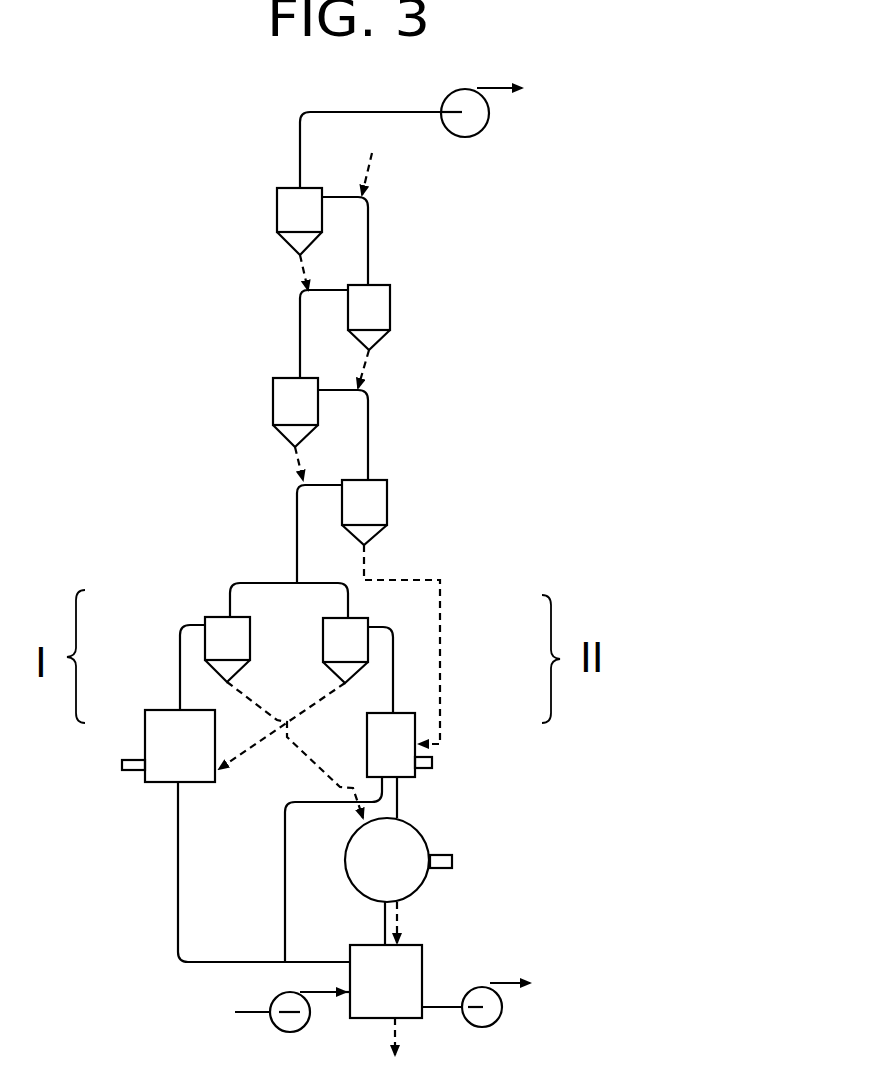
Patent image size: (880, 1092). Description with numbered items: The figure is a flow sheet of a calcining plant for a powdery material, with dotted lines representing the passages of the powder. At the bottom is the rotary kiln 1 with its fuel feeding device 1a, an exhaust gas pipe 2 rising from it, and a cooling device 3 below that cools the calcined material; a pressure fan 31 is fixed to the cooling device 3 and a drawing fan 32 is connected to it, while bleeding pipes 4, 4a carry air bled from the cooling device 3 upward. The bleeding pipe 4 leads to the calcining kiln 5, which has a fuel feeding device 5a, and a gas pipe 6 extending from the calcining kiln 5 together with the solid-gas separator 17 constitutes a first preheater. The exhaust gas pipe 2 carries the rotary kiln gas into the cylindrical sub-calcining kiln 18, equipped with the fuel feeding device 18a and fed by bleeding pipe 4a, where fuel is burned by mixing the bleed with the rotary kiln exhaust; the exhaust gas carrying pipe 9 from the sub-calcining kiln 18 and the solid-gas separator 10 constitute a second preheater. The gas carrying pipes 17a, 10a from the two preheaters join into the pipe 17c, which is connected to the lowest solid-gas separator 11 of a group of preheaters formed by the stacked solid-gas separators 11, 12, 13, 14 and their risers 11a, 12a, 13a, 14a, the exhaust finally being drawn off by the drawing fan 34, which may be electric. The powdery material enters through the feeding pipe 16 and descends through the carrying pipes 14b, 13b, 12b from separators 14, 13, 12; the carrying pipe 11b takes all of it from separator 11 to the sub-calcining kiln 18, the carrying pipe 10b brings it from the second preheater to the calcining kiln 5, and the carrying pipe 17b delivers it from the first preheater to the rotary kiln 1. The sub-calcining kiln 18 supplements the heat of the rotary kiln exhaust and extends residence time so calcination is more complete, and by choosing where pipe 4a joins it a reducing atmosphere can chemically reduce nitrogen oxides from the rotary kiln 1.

The rotary kiln 1 is at (387, 881).
The feeding device 1a is at (453, 862).
The exhaust gas pipe 2 is at (398, 800).
The cooling device 3 is at (386, 1000).
The bleeding pipe 4 is at (177, 882).
The bleeding pipe 4a is at (285, 884).
The calcining kiln 5 is at (180, 746).
The feeding device 5a is at (127, 780).
The gas pipe 6 is at (180, 665).
The exhaust gas carrying pipe 9 is at (395, 665).
The solid-gas separator 10 is at (345, 650).
The gas carrying pipe 10a is at (350, 600).
The powdery material carrying pipe 10b is at (328, 692).
The solid-gas separator 11 is at (364, 512).
The riser 11a is at (368, 433).
The powdery material carrying pipe 11b is at (442, 597).
The solid-gas separator 12 is at (295, 412).
The riser 12a is at (298, 340).
The powdery material carrying pipe 12b is at (295, 460).
The solid-gas separator 13 is at (369, 317).
The riser 13a is at (368, 238).
The powdery material carrying pipe 13b is at (365, 366).
The solid-gas separator 14 is at (299, 221).
The riser 14a is at (300, 122).
The powdery material carrying pipe 14b is at (300, 268).
The feeding pipe 16 is at (373, 165).
The solid-gas separator 17 is at (227, 649).
The gas carrying pipe 17a is at (232, 593).
The powdery material carrying pipe 17b is at (252, 678).
The pipe 17c is at (297, 529).
The sub-calcining kiln 18 is at (391, 745).
The feeding device 18a is at (433, 762).
The pressure fan 31 is at (290, 1032).
The drawing fan 32 is at (485, 1027).
The drawing fan 34 is at (489, 118).